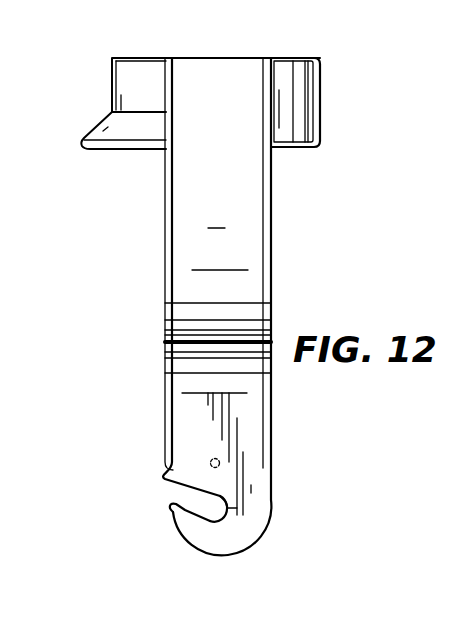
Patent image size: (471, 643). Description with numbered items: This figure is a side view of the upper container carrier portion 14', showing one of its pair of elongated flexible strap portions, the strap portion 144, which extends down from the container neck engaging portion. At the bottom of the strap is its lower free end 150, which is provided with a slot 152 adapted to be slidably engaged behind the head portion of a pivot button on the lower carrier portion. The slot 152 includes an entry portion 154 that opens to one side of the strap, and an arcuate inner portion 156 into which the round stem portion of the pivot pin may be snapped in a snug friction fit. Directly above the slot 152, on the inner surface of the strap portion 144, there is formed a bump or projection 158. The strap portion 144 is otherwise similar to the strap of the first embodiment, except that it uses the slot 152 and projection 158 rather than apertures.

The upper container carrier portion 14' is at (183, 84).
The strap portion 144 is at (278, 238).
The lower free end 150 is at (257, 546).
The slot 152 is at (156, 497).
The entry portion 154 is at (167, 516).
The arcuate inner portion 156 is at (273, 503).
The bump or projection 158 is at (222, 460).